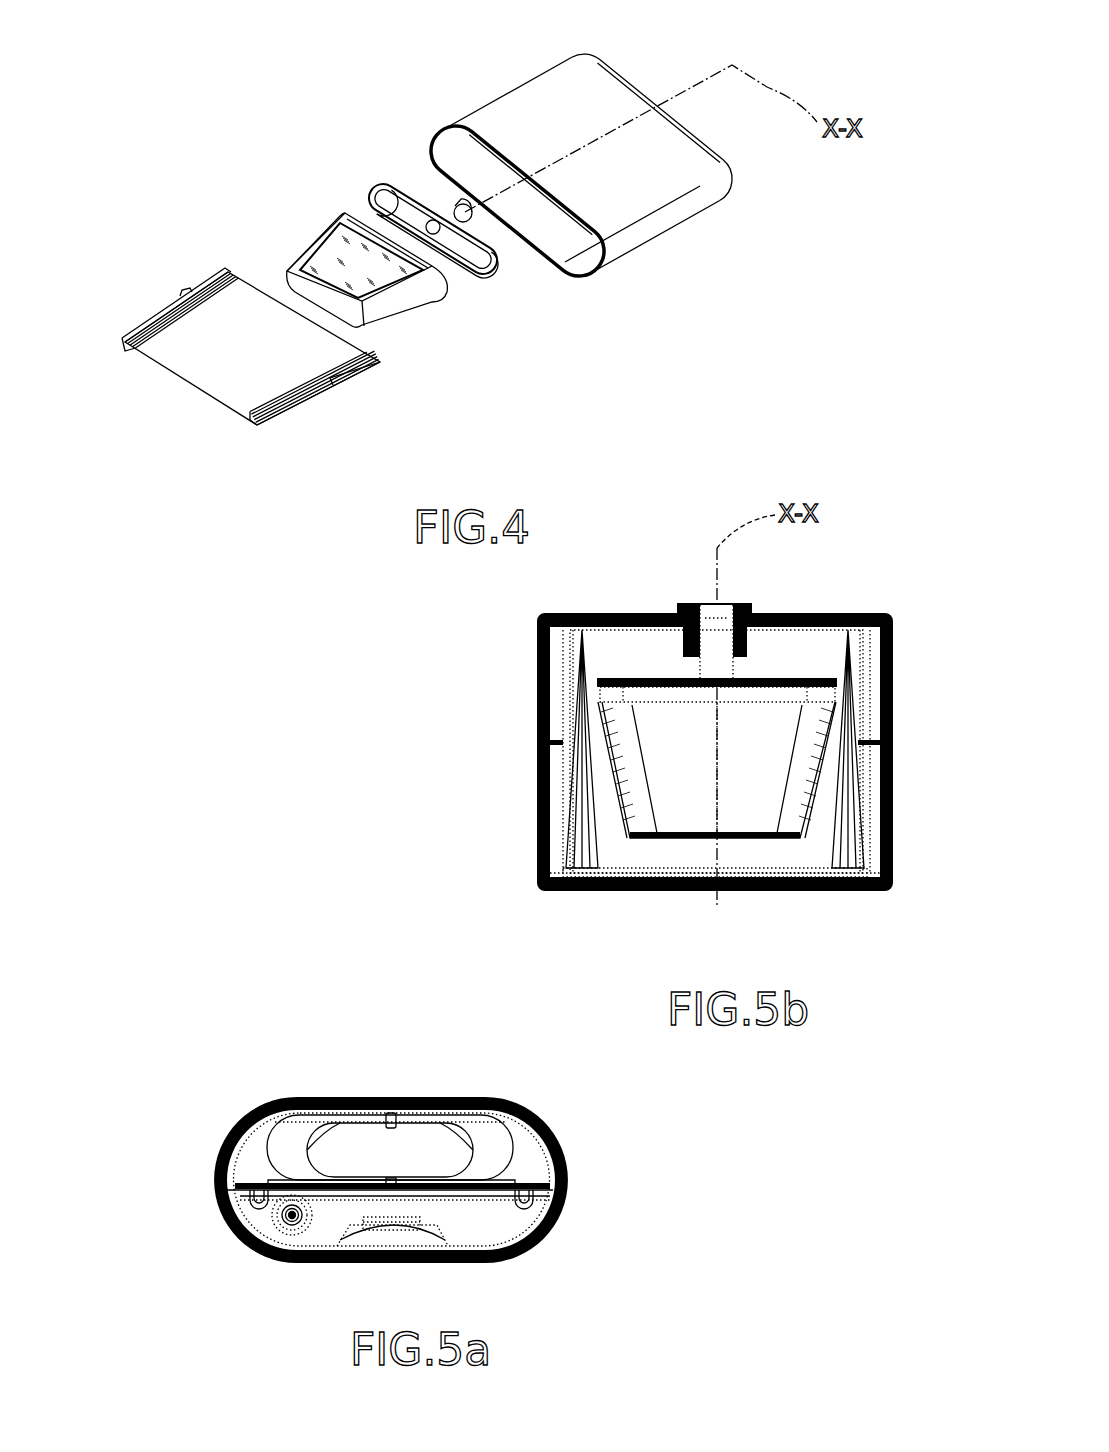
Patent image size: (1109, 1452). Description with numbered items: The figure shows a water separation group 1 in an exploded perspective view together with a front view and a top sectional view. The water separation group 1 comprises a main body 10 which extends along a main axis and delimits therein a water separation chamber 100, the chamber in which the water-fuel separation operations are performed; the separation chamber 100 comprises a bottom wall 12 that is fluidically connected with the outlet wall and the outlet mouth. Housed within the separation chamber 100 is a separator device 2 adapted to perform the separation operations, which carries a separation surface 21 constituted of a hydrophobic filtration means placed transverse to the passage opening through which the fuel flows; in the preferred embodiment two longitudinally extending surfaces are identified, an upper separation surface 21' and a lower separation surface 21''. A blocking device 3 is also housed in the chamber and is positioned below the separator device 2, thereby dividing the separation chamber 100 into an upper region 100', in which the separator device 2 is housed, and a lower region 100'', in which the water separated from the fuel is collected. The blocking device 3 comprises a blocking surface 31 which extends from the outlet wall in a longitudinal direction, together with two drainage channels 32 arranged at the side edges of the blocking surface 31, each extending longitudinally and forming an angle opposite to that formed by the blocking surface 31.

In FIG. 4, the water separation group 1 is at (672, 361).
In FIG. 5a, the water separation group 1 is at (421, 1100).
In FIG. 4, the separator device 2 is at (347, 174).
In FIG. 5b, the separator device 2 is at (618, 826).
In FIG. 4, the blocking device 3 is at (209, 244).
In FIG. 5b, the blocking device 3 is at (809, 877).
In FIG. 5a, the blocking device 3 is at (539, 1208).
In FIG. 4, the main body 10 is at (685, 234).
In FIG. 5b, the bottom wall 12 is at (836, 624).
In FIG. 4, the separation surface 21 is at (418, 303).
In FIG. 5a, the upper separation surface 21' is at (390, 1077).
In FIG. 5a, the lower separation surface 21'' is at (287, 1121).
In FIG. 4, the blocking surface 31 is at (437, 220).
In FIG. 5b, the blocking surface 31 is at (738, 857).
In FIG. 5a, the blocking surface 31 is at (400, 1180).
In FIG. 4, the drainage channel 32 is at (123, 343).
In FIG. 5b, the drainage channel 32 is at (576, 804).
In FIG. 5a, the drainage channel 32 is at (245, 1208).
In FIG. 4, the water separation chamber 100 is at (495, 147).
In FIG. 5b, the water separation chamber 100 is at (715, 801).
In FIG. 5a, the upper region 100' is at (402, 1077).
In FIG. 5a, the lower region 100'' is at (453, 1252).